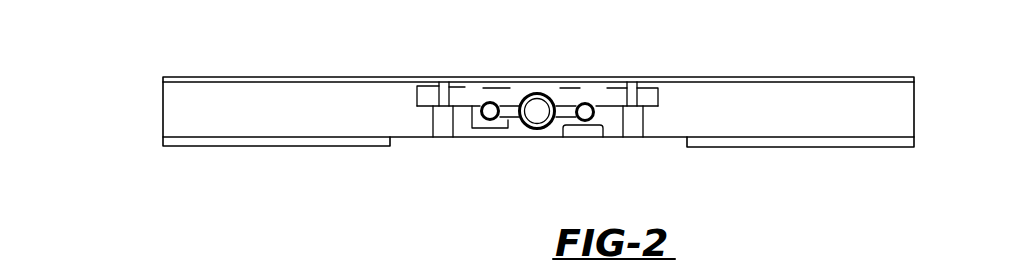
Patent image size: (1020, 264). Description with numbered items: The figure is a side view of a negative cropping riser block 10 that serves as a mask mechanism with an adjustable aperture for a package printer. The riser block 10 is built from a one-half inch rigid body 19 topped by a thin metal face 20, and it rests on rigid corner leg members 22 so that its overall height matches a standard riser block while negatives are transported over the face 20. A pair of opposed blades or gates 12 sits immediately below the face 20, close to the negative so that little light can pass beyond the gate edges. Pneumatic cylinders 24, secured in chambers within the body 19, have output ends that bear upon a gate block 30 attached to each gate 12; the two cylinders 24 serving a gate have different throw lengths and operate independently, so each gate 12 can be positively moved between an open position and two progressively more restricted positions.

The negative cropping riser block 10 is at (124, 88).
The gates 12 is at (565, 95).
The rigid body 19 is at (273, 100).
The metal face 20 is at (362, 77).
The corner leg members 22 is at (380, 146).
The pneumatic cylinders 24 is at (499, 121).
The gate block 30 is at (567, 118).